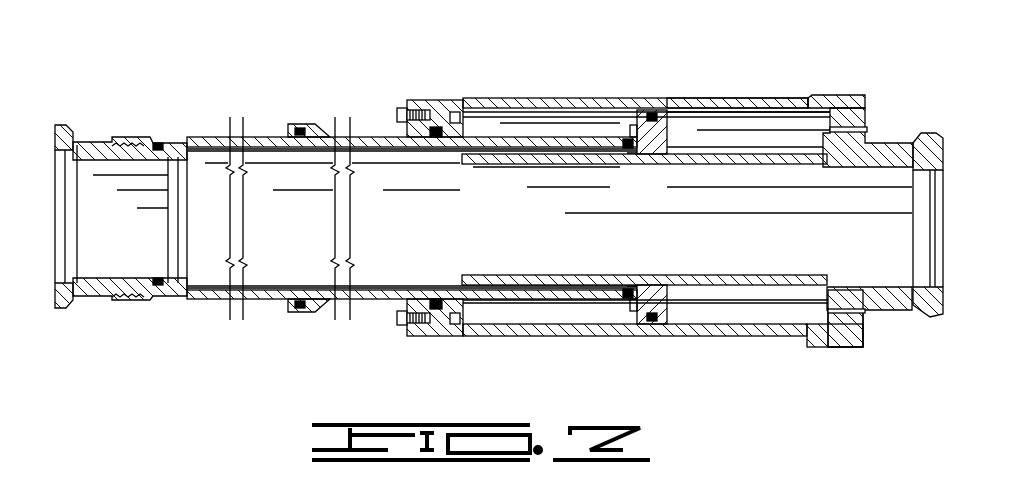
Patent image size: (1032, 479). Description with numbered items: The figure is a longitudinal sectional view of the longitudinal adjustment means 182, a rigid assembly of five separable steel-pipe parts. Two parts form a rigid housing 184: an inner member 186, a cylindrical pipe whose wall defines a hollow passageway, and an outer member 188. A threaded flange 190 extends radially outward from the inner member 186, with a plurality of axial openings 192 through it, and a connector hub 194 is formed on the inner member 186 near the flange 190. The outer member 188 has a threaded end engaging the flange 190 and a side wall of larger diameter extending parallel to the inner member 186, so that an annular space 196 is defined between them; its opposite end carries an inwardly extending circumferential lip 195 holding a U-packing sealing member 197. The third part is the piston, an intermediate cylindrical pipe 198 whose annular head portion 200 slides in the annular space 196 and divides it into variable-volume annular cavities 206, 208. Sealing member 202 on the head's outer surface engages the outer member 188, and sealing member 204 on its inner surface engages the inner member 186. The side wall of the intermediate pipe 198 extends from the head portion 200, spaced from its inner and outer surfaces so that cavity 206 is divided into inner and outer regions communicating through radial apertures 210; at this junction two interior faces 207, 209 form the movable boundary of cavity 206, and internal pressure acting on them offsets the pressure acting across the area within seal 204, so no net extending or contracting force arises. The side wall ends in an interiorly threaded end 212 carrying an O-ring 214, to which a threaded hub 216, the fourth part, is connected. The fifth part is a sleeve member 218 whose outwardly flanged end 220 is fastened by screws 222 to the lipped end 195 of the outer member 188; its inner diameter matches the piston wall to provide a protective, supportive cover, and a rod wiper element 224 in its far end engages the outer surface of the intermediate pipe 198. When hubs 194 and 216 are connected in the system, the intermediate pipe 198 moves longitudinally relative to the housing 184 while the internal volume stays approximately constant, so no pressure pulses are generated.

The longitudinal adjustment means 182 is at (831, 68).
The rigid housing 184 is at (828, 356).
The inner member 186 is at (888, 143).
The outer member 188 is at (722, 100).
The threaded flange 190 is at (853, 323).
The openings 192 is at (872, 125).
The hub 194 is at (930, 133).
The inwardly extending circumferential lip 195 is at (452, 112).
The annular space 196 is at (689, 115).
The sealing member 197 is at (433, 128).
The intermediate cylindrical pipe 198 is at (257, 137).
The head portion 200 is at (650, 112).
The sealing member 202 is at (652, 113).
The sealing member 204 is at (660, 165).
The annular cavity 206 is at (537, 124).
The interior face 207 is at (637, 130).
The annular cavity 208 is at (743, 138).
The interior face 209 is at (637, 155).
The apertures 210 is at (630, 139).
The interiorly threaded end 212 is at (123, 138).
The O-ring 214 is at (157, 143).
The threaded hub 216 is at (68, 130).
The sleeve member 218 is at (358, 300).
The outwardly flanged end 220 is at (408, 337).
The screws 222 is at (398, 110).
The rod wiper element 224 is at (293, 302).